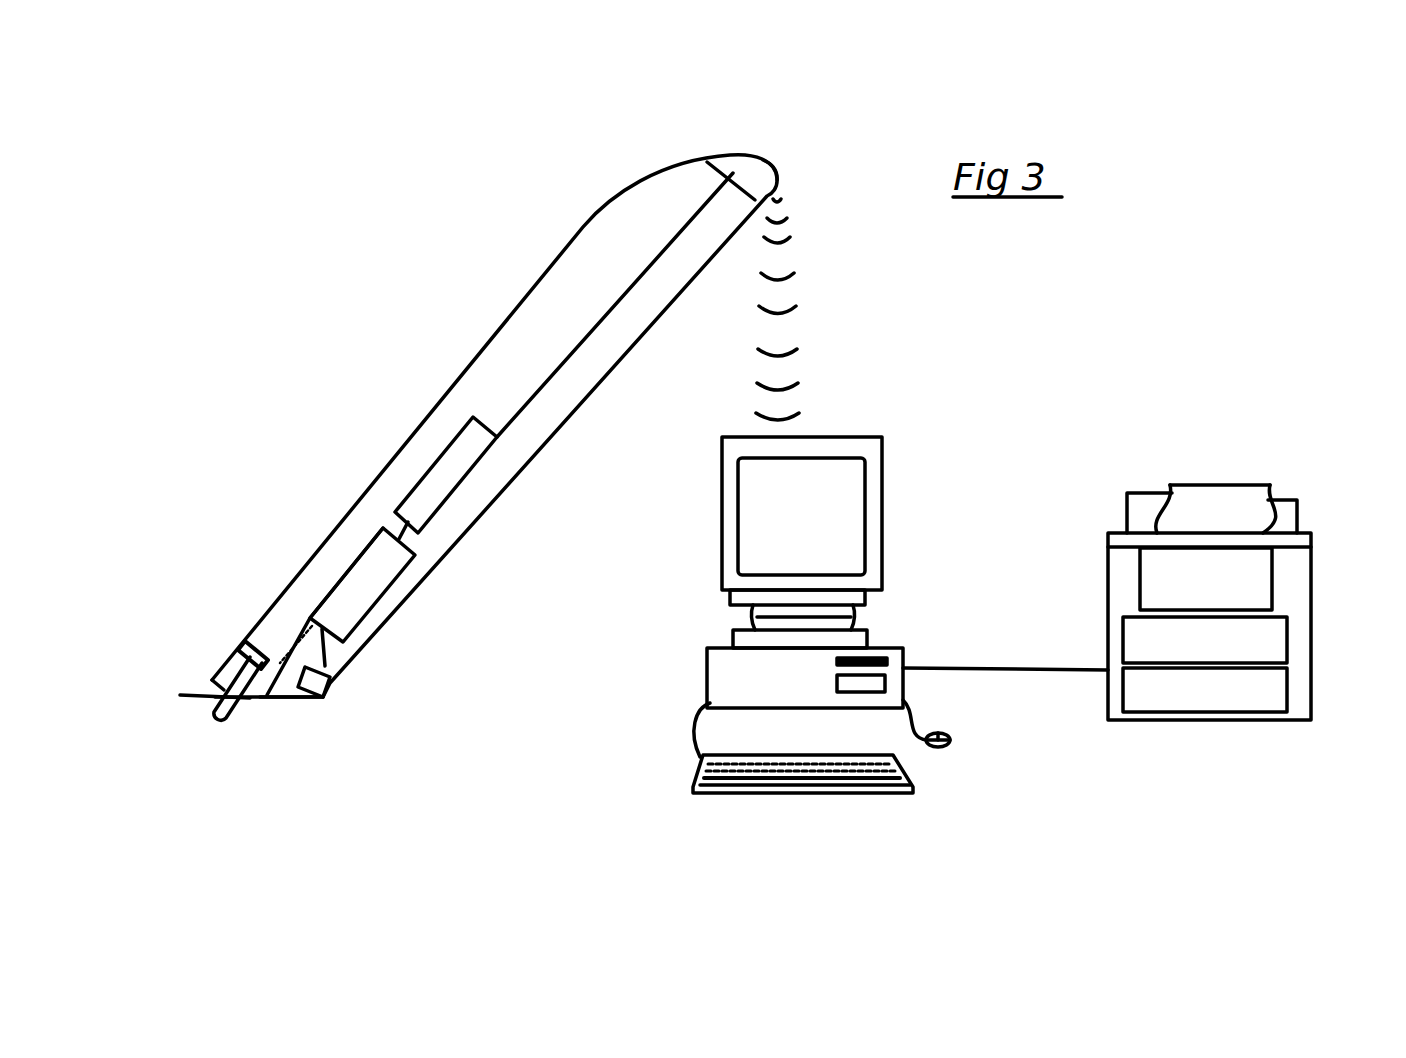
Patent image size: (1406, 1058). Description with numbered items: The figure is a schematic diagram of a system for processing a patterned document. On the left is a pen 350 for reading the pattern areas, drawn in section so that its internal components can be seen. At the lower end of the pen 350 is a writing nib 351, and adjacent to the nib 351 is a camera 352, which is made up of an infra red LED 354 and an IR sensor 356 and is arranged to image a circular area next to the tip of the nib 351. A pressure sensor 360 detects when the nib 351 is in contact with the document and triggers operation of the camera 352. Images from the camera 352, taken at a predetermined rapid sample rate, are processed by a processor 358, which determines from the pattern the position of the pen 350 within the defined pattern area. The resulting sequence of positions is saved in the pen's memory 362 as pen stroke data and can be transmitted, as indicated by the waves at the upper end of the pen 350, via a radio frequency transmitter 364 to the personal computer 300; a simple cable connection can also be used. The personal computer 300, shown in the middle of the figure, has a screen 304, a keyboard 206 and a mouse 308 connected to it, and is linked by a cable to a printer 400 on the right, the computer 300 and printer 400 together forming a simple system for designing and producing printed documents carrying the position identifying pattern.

The pen 350 is at (500, 338).
The writing nib 351 is at (187, 694).
The camera 352 is at (331, 699).
The infra red (IR) LED 354 is at (300, 698).
The IR sensor 356 is at (283, 685).
The processor 358 is at (370, 590).
The pressure sensor 360 is at (252, 640).
The memory 362 is at (442, 458).
The radio frequency transmitter 364 is at (743, 178).
The personal computer (PC) 300 is at (707, 653).
The screen 304 is at (848, 505).
The keyboard 206 is at (860, 792).
The mouse 308 is at (943, 747).
The printer 400 is at (1311, 695).